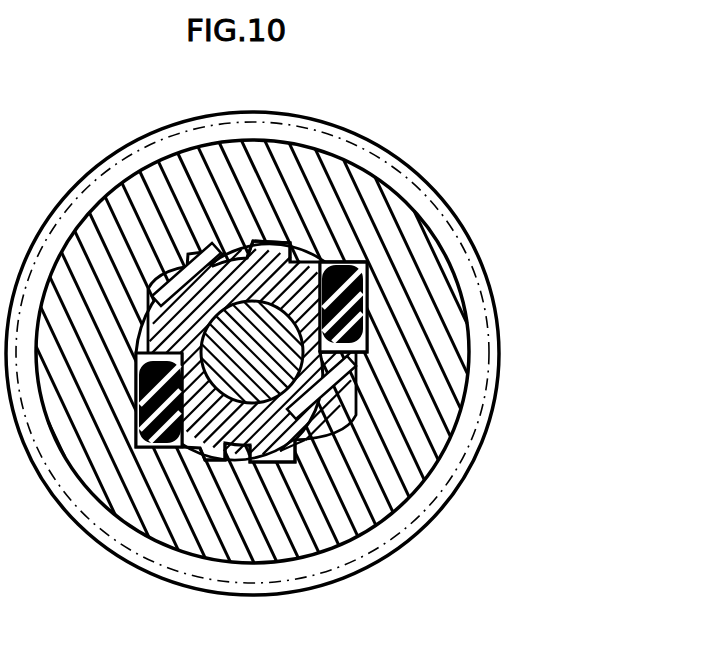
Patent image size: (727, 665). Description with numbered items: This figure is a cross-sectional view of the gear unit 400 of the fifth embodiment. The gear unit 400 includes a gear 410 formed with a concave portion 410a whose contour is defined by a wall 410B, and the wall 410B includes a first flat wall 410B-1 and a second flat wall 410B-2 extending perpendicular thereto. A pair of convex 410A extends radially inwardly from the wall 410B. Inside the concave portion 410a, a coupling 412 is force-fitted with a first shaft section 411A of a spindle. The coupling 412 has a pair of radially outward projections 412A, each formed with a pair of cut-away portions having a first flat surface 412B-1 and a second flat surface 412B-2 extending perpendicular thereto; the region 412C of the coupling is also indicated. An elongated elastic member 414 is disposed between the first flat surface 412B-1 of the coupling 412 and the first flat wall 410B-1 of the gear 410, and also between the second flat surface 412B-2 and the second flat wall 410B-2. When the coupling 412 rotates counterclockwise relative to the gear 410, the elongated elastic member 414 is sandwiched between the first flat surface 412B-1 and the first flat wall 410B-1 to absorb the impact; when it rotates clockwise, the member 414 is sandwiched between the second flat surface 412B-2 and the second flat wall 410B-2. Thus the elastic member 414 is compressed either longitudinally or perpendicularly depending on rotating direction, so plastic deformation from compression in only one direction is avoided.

The gear unit 400 is at (478, 115).
The gear 410 is at (340, 226).
The concave portion 410a is at (268, 255).
The convex 410A is at (287, 452).
The wall 410B is at (232, 466).
The first flat wall 410B-1 is at (362, 264).
The second flat wall 410B-2 is at (364, 322).
The coupling 412 is at (334, 398).
The radially outward projection 412A is at (310, 331).
The first flat surface 412B-1 is at (345, 392).
The second flat surface 412B-2 is at (352, 372).
The rotor core portion 412C is at (308, 453).
The first shaft section 411A is at (318, 412).
The elongated elastic member 414 is at (352, 282).